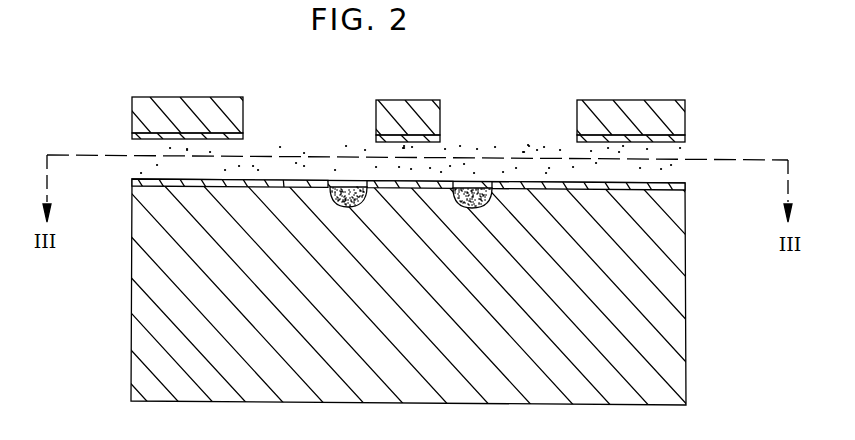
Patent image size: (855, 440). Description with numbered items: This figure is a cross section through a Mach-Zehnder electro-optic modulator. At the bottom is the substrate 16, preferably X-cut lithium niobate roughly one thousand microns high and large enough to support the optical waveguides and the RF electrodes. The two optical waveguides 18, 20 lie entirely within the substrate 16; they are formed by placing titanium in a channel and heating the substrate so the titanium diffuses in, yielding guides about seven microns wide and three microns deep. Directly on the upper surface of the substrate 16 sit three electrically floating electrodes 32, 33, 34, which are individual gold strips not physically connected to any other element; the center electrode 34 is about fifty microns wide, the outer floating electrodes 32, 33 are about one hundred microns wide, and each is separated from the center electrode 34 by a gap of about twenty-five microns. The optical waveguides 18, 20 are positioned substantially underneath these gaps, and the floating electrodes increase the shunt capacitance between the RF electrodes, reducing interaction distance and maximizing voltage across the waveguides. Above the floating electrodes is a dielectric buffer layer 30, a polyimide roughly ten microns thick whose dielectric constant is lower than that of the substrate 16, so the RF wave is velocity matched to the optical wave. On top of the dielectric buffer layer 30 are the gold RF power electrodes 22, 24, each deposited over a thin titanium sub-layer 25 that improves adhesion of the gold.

The substrate 16 is at (132, 311).
The optical waveguide 18 is at (332, 201).
The optical waveguide 20 is at (490, 205).
The RF power electrode 22 is at (194, 106).
The RF power electrode 24 is at (413, 103).
The sub-layer 25 is at (243, 139).
The dielectric buffer layer 30 is at (137, 162).
The floating electrode 32 is at (160, 186).
The floating electrode 33 is at (684, 183).
The center electrode 34 is at (397, 188).